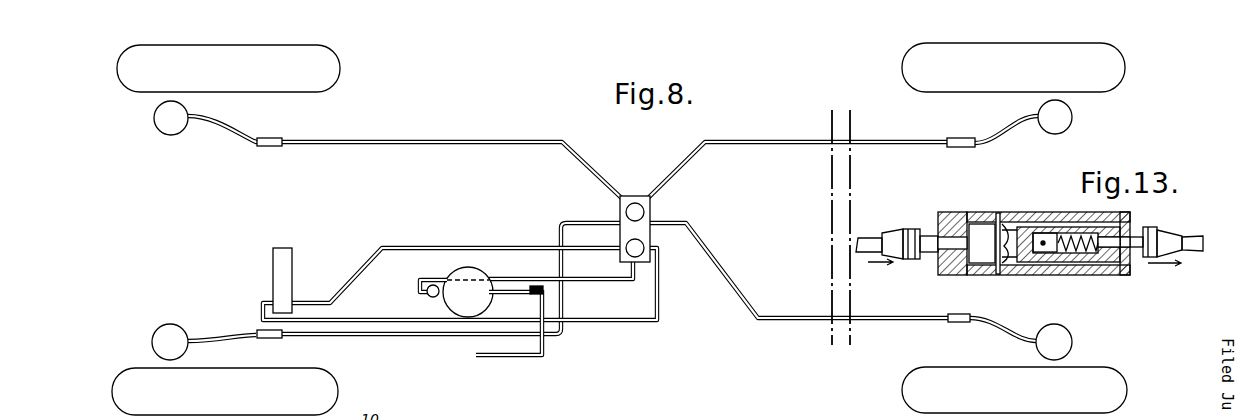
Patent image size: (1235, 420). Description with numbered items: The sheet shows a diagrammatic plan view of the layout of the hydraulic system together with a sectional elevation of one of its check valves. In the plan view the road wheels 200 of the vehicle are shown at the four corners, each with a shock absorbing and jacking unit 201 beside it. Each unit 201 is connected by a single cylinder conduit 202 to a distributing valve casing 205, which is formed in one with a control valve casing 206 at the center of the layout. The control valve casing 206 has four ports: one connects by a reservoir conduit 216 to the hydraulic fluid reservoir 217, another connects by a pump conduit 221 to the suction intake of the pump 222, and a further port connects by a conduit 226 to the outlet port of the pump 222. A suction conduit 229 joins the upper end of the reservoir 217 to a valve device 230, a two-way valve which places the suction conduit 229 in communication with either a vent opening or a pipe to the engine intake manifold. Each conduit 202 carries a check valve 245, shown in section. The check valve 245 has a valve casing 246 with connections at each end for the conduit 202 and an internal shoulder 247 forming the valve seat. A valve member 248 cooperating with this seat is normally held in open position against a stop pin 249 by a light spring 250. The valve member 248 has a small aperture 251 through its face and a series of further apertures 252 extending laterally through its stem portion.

In FIG. 8, the road wheel 200 is at (118, 69).
In FIG. 8, the shock absorbing and jacking unit 201 is at (156, 120).
In FIG. 8, the cylinder conduit 202 is at (373, 142).
In FIG. 13, the cylinder conduit 202 is at (871, 240).
In FIG. 8, the distributing valve casing 205 is at (649, 211).
In FIG. 8, the control valve casing 206 is at (650, 238).
In FIG. 8, the reservoir conduit 216 is at (613, 280).
In FIG. 8, the hydraulic fluid reservoir 217 is at (450, 294).
In FIG. 8, the pump conduit 221 is at (385, 262).
In FIG. 8, the pump 222 is at (283, 257).
In FIG. 8, the conduit 226 is at (645, 321).
In FIG. 8, the suction conduit 229 is at (520, 293).
In FIG. 8, the valve device 230 is at (543, 289).
In FIG. 8, the check valve 245 is at (960, 139).
In FIG. 13, the valve casing 246 is at (1008, 232).
In FIG. 13, the internal shoulder 247 is at (1038, 275).
In FIG. 13, the valve member 248 is at (1010, 268).
In FIG. 13, the stop pin 249 is at (978, 268).
In FIG. 13, the light spring 250 is at (1088, 263).
In FIG. 13, the small aperture 251 is at (996, 224).
In FIG. 13, the apertures 252 is at (1045, 241).